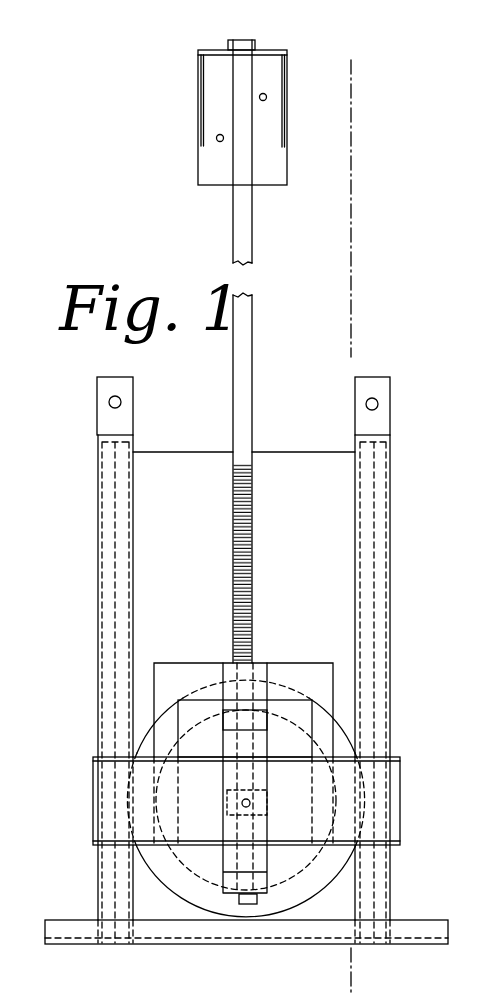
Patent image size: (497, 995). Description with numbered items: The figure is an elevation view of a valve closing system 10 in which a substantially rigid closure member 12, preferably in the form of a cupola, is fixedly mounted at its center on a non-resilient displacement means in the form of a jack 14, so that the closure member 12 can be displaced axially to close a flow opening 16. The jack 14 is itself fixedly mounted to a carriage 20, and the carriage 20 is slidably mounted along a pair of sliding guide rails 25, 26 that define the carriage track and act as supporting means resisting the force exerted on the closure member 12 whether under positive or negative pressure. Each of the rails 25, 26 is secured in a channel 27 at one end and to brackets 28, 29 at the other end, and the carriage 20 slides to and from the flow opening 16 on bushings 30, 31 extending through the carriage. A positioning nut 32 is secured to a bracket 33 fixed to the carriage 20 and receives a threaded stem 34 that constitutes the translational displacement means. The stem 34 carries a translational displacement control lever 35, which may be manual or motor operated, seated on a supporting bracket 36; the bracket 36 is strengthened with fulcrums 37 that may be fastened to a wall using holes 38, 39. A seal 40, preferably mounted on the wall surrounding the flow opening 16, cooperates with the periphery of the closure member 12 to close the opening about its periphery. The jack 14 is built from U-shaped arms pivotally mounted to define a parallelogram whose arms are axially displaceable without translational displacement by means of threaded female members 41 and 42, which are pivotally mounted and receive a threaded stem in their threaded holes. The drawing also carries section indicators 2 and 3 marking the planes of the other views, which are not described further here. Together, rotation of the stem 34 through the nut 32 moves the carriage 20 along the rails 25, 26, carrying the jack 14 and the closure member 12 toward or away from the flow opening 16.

The section line 2- 2 is at (82, 640).
The section line 3- 3 is at (314, 37).
The valve closing system 10 is at (410, 300).
The closure member 12 is at (330, 872).
The jack 14 is at (260, 745).
The flow opening 16 is at (318, 730).
The carriage 20 is at (343, 795).
The sliding guide rail 25 is at (108, 470).
The sliding guide rail 26 is at (380, 478).
The channel 27 is at (68, 934).
The bracket 28 is at (383, 415).
The bracket 29 is at (115, 385).
The bushing 30 is at (380, 824).
The bushing 31 is at (110, 793).
The positioning nut 32 is at (262, 670).
The bracket 33 is at (208, 675).
The stem 34 is at (245, 415).
The translational displacement control lever 35 is at (228, 44).
The supporting bracket 36 is at (267, 80).
The fulcrum 37 is at (198, 97).
The hole 38 is at (266, 100).
The hole 39 is at (217, 141).
The seal 40 is at (333, 538).
The threaded female member 41 is at (230, 884).
The threaded female member 42 is at (228, 718).